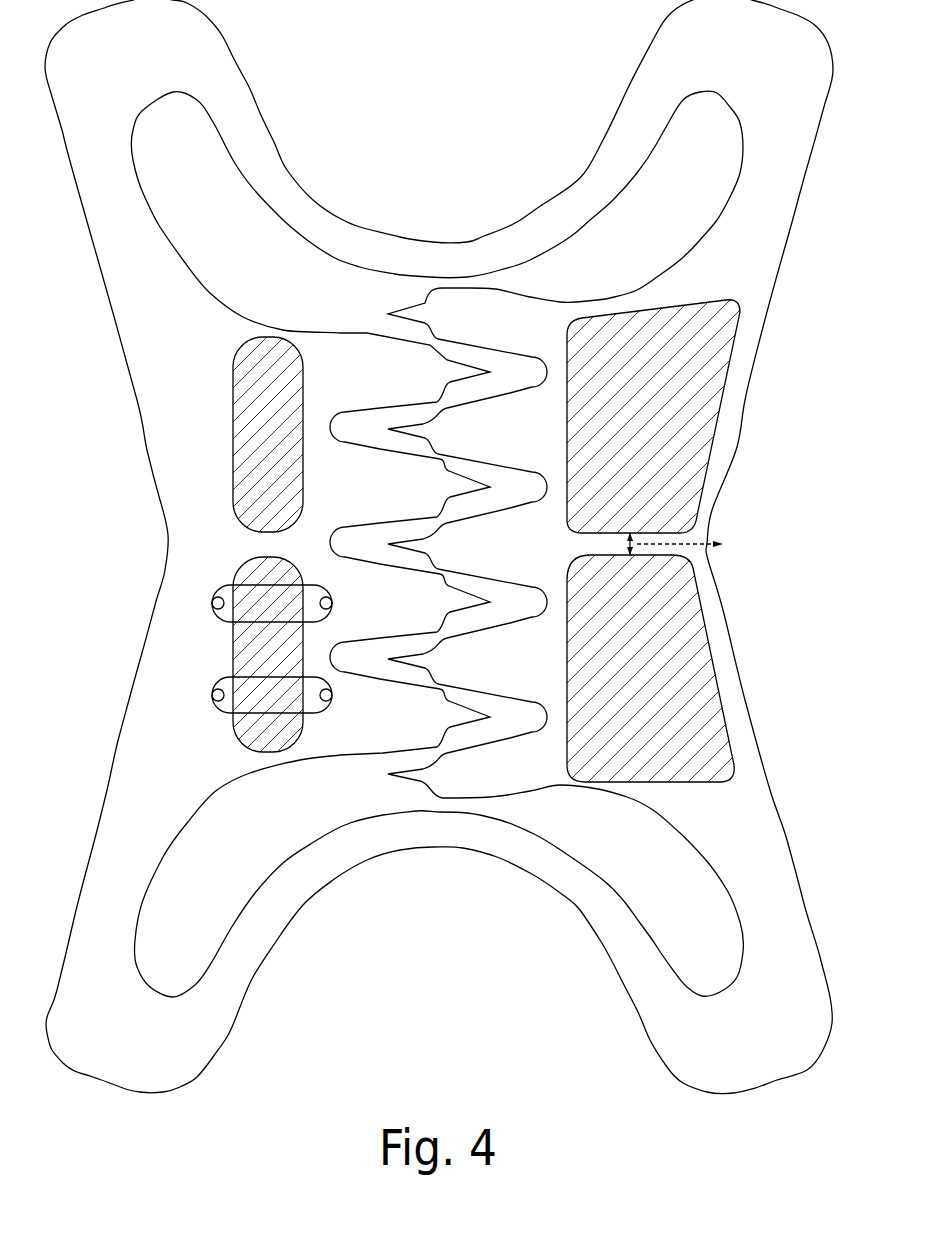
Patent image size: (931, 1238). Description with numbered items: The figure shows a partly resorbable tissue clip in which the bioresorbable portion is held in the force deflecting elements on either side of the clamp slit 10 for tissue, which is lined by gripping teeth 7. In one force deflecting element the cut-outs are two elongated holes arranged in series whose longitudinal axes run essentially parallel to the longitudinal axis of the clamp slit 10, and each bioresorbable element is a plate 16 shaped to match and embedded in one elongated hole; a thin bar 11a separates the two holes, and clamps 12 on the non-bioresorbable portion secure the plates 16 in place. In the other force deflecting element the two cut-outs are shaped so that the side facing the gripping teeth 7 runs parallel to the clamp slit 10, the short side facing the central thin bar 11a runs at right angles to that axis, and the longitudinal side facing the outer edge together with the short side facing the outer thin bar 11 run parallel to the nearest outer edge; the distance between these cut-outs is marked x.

The gripping teeth 7 is at (400, 716).
The clamp slit 10 is at (527, 605).
The outer thin bar 11 is at (628, 296).
The thin bar 11a is at (127, 552).
The clamps 12 is at (222, 706).
The plate 16 is at (263, 457).
The gap distance x is at (637, 541).